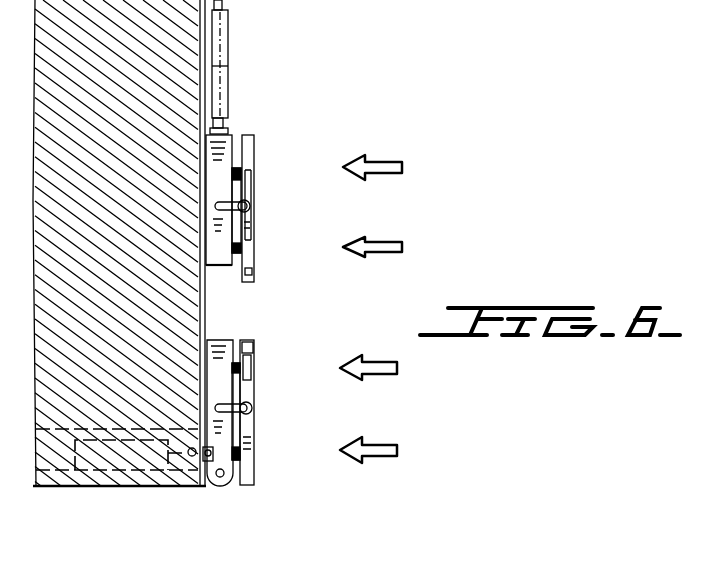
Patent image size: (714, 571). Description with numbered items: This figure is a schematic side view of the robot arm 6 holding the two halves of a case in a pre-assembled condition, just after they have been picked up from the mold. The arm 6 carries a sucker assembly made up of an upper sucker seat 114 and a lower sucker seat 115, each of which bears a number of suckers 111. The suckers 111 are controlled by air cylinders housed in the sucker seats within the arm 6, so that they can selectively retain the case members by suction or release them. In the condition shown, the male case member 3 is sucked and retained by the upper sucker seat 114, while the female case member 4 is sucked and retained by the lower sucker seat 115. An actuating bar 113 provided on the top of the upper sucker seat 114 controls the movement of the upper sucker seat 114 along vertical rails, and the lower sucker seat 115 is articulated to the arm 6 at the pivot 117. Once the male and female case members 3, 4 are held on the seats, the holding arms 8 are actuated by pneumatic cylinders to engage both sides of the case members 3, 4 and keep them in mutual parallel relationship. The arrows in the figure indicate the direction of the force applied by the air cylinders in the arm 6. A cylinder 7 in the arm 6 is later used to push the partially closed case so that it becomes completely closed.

The male case member 3 is at (255, 163).
The female case member 4 is at (253, 370).
The arm 6 is at (208, 66).
The cylinder 7 is at (102, 477).
The holding arms 8 is at (250, 207).
The suckers 111 is at (241, 252).
The actuating bar 113 is at (229, 92).
The upper sucker seat 114 is at (217, 155).
The lower sucker seat 115 is at (217, 340).
The articulation point 117 is at (220, 483).